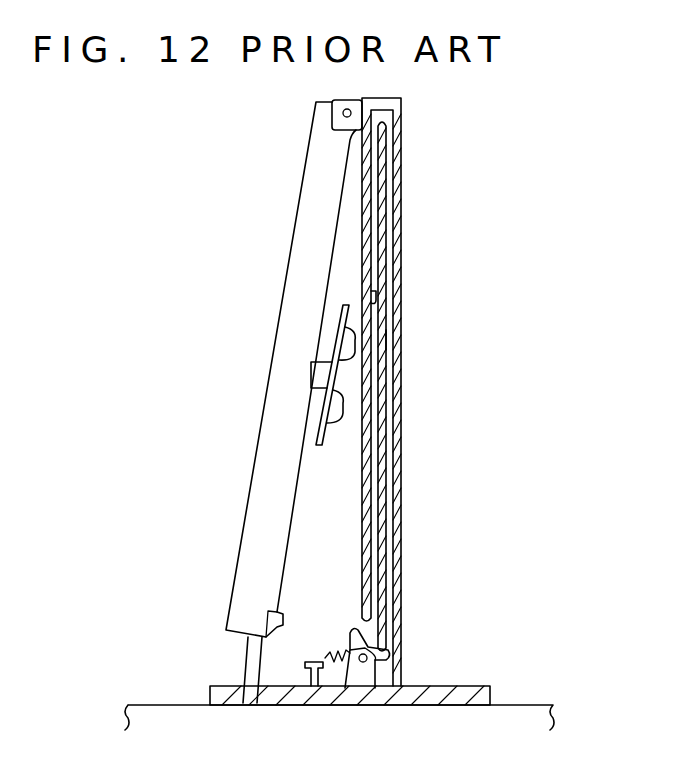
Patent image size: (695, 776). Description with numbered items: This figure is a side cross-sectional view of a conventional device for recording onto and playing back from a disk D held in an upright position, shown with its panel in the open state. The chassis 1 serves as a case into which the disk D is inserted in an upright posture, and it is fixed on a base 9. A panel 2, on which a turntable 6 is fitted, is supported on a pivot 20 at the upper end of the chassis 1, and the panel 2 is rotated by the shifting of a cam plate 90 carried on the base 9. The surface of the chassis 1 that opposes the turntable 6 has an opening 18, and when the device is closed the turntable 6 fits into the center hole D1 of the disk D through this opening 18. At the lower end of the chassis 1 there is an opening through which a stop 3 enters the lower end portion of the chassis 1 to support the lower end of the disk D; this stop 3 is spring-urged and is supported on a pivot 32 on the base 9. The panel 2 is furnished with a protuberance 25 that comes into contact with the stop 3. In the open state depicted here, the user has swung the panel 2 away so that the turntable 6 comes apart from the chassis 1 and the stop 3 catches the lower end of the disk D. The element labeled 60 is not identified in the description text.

The chassis 1 is at (400, 176).
The panel 2 is at (310, 192).
The stop 3 is at (393, 652).
The turntable 6 is at (334, 390).
The base 9 is at (520, 713).
The opening 18 is at (375, 300).
The pivot 20 is at (340, 113).
The protuberance 25 is at (263, 622).
The pivot 32 is at (380, 668).
The slide plate 60 is at (343, 362).
The cam plate 90 is at (468, 697).
The disk D is at (380, 209).
The center hole D1 is at (390, 346).